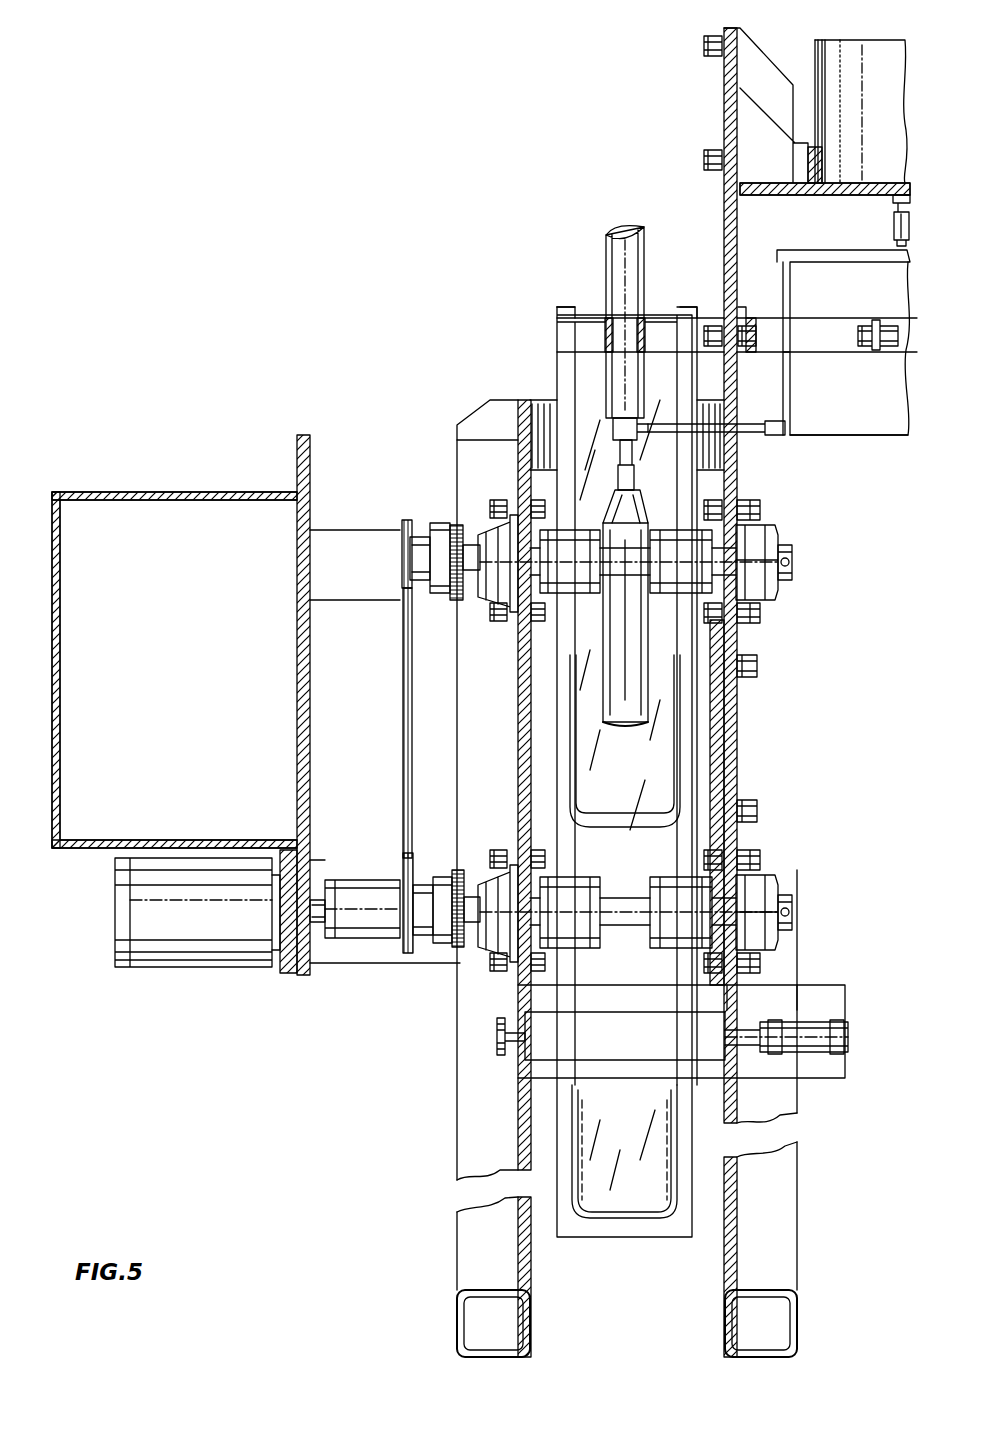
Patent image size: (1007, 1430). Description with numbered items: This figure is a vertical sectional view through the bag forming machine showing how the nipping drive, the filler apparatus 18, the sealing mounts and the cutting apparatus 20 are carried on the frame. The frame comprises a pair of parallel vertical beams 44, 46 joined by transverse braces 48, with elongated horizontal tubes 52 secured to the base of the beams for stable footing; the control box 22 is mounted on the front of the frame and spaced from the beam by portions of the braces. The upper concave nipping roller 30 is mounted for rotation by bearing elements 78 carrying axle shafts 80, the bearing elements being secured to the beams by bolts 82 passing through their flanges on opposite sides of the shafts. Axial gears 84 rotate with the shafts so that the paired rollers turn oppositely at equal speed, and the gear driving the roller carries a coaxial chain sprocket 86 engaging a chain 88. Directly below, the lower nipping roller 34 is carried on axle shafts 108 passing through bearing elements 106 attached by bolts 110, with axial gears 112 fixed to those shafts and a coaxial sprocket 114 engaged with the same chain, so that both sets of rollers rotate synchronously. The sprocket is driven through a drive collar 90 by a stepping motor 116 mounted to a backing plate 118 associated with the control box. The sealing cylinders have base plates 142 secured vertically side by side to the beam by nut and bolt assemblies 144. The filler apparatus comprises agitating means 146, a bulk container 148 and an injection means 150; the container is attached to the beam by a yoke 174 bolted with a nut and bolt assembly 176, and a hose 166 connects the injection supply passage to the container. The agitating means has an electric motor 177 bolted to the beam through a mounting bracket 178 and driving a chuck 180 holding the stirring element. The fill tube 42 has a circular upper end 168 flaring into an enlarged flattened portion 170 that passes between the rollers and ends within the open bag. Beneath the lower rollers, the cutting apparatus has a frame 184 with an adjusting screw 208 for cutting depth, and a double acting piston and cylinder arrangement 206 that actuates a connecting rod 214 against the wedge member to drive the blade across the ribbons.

The filler apparatus 18 is at (791, 39).
The cutting apparatus 20 is at (830, 1093).
The control box 22 is at (122, 478).
The nipping roller 30 is at (753, 602).
The lower nipping roller 34 is at (550, 870).
The fill tube 42 is at (655, 500).
The vertical beam 44 is at (528, 1270).
The vertical beam 46 is at (732, 1262).
The transverse brace 48 is at (342, 528).
The horizontal tube 52 is at (527, 1333).
The bearing element 78 is at (482, 535).
The axle shaft 80 is at (545, 600).
The bolt 82 is at (493, 502).
The axial gear 84 is at (452, 526).
The chain sprocket 86 is at (404, 540).
The chain 88 is at (403, 712).
The drive collar 90 is at (368, 937).
The bearing element 106 is at (470, 965).
The axle shaft 108 is at (513, 857).
The bolt 110 is at (490, 858).
The axial gear 112 is at (455, 948).
The coaxial sprocket 114 is at (405, 895).
The stepping motor 116 is at (175, 968).
The backing plate 118 is at (303, 975).
The base plate 142 is at (720, 745).
The nut and bolt assembly 144 is at (758, 668).
The agitating means 146 is at (818, 42).
The bulk container 148 is at (876, 430).
The injection means 150 is at (608, 258).
The hose 166 is at (772, 422).
The circular upper end 168 is at (595, 430).
The flattened portion 170 is at (643, 697).
The yoke 174 is at (803, 316).
The nut and bolt assembly 176 is at (712, 333).
The electric motor 177 is at (846, 46).
The mounting bracket 178 is at (750, 100).
The chuck 180 is at (897, 235).
The frame 184 is at (733, 1018).
The piston and cylinder arrangement 206 is at (848, 1035).
The adjusting screw 208 is at (505, 1040).
The connecting rod 214 is at (745, 1042).